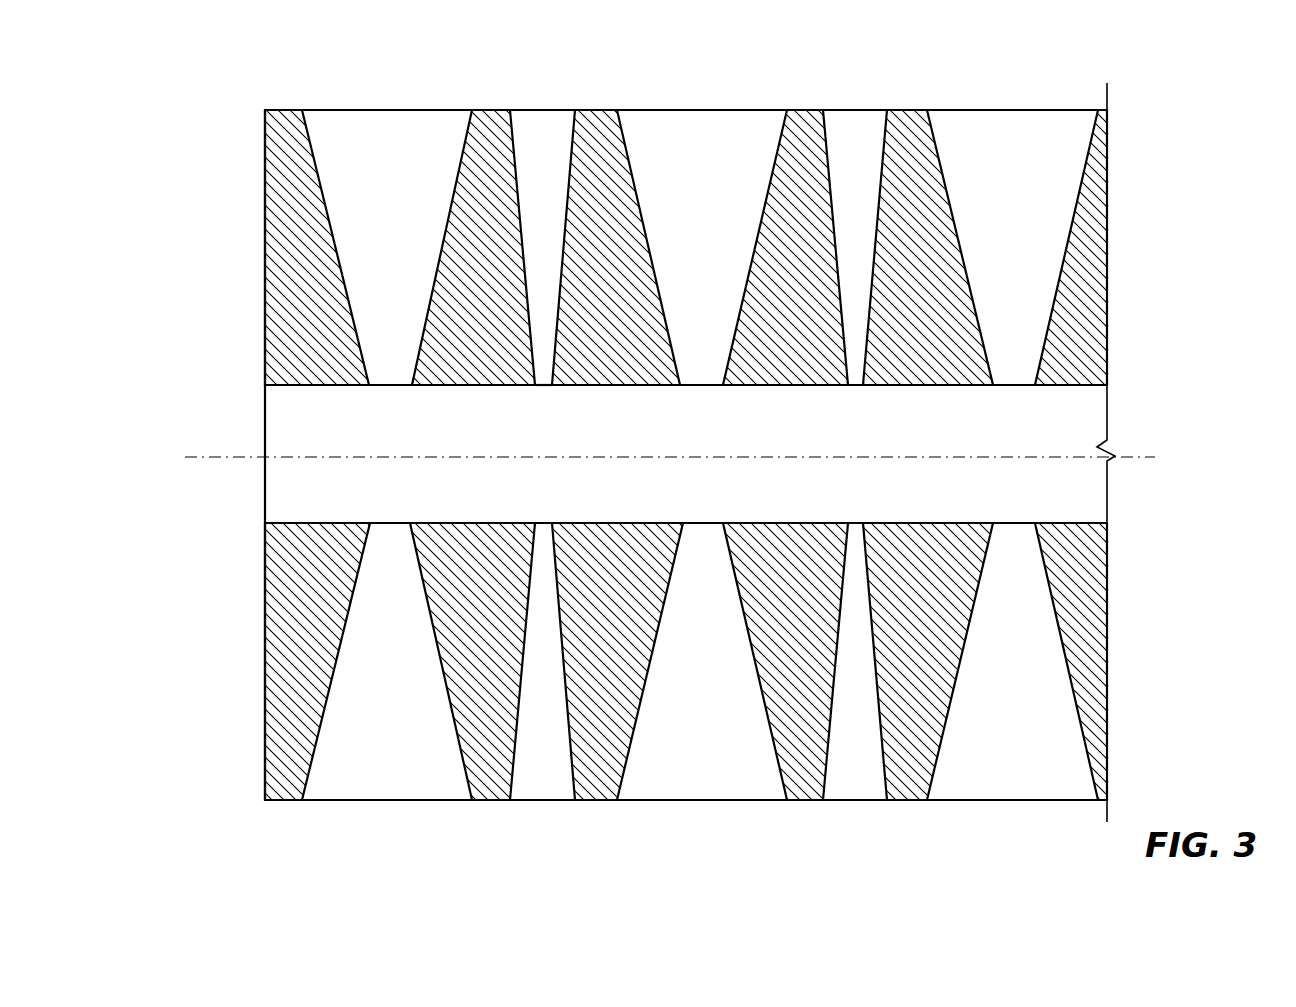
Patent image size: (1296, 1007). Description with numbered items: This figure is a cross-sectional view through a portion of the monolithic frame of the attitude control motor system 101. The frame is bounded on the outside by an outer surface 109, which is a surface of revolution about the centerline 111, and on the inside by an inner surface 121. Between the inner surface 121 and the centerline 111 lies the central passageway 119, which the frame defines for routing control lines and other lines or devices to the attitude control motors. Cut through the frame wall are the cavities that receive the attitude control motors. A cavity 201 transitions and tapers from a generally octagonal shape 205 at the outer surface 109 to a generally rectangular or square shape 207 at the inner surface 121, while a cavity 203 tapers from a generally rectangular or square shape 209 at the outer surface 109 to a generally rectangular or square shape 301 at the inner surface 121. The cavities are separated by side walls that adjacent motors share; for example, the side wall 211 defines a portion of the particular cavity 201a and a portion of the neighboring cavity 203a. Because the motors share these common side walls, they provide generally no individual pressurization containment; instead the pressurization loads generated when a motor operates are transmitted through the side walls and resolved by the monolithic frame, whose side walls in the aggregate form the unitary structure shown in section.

The monolithic attitude control motor system 101 is at (205, 170).
The outer surface 109 is at (290, 110).
The centerline 111 is at (237, 456).
The central passageway 119 is at (310, 488).
The inner surface 121 is at (285, 390).
The cavity 201 is at (373, 128).
The cavity 201a is at (730, 237).
The cavity 203 is at (540, 128).
The cavity 203a is at (857, 142).
The generally octagonal shape 205 is at (472, 110).
The generally rectangular or square shape 207 is at (412, 385).
The generally rectangular or square shape 209 is at (575, 112).
The side wall 211 is at (815, 276).
The generally rectangular or square shape 301 is at (552, 385).